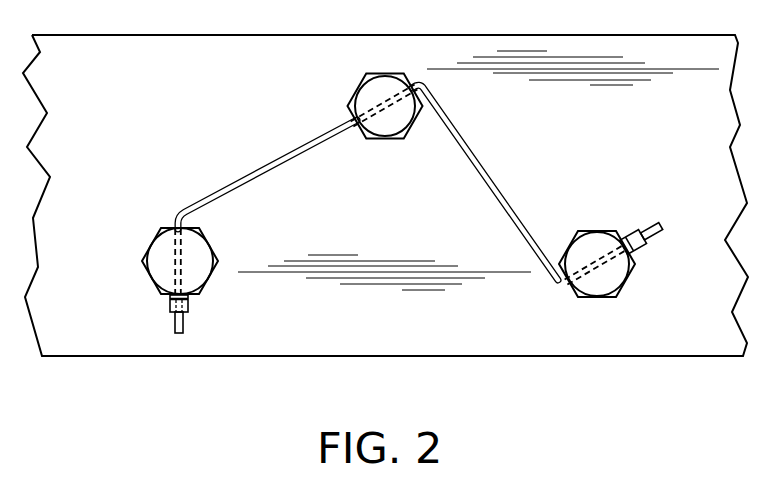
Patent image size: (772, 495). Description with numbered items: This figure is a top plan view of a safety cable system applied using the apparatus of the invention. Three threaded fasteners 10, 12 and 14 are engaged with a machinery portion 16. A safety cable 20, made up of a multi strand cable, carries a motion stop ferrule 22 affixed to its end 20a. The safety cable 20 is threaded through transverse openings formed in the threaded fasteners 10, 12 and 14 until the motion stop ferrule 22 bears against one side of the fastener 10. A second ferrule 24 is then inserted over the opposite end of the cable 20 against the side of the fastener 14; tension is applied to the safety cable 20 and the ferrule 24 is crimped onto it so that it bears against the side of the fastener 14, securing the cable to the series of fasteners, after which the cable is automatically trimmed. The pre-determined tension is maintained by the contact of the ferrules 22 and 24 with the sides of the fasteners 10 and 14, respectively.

The threaded fastener 10 is at (153, 268).
The threaded fastener 12 is at (362, 92).
The threaded fastener 14 is at (613, 281).
The machinery portion 16 is at (560, 338).
The safety cable 20 is at (297, 160).
The end 20a is at (175, 324).
The motion stop ferrule 22 is at (190, 300).
The ferrule 24 is at (626, 236).